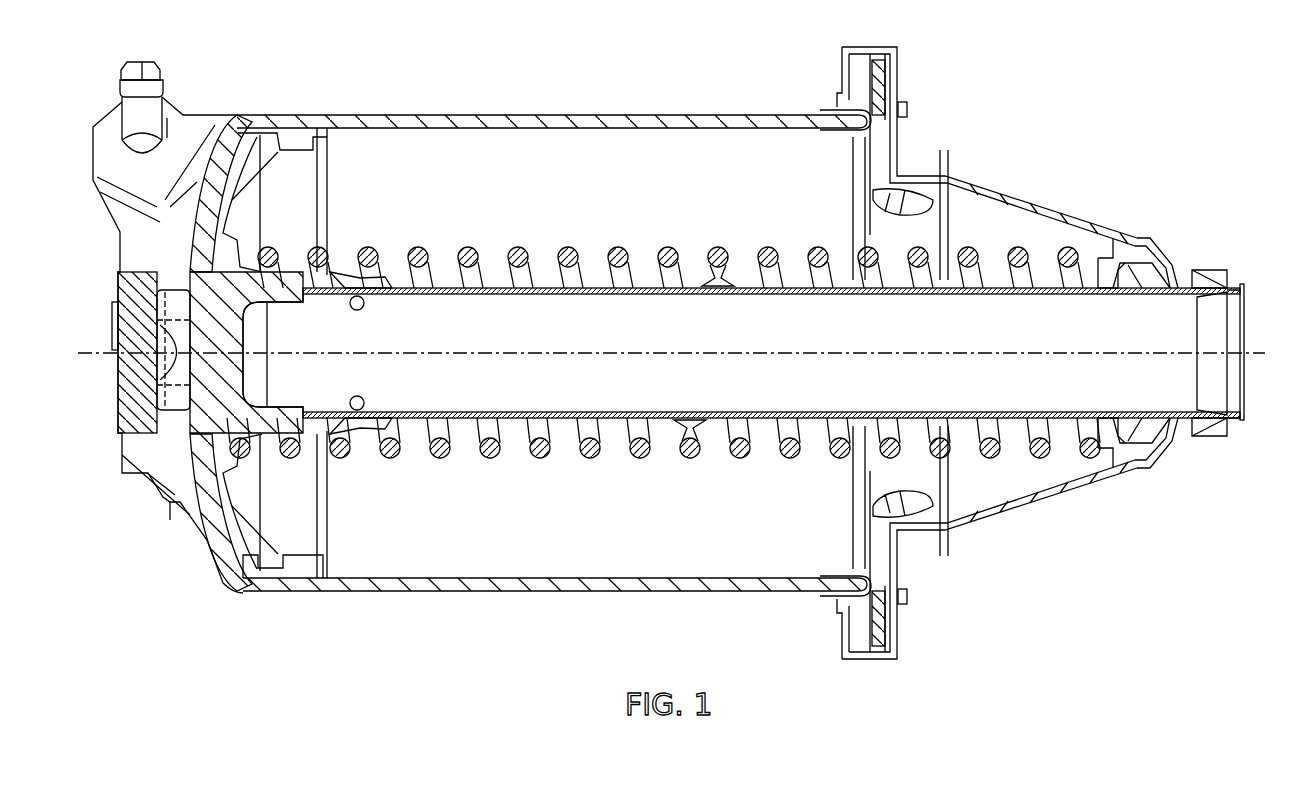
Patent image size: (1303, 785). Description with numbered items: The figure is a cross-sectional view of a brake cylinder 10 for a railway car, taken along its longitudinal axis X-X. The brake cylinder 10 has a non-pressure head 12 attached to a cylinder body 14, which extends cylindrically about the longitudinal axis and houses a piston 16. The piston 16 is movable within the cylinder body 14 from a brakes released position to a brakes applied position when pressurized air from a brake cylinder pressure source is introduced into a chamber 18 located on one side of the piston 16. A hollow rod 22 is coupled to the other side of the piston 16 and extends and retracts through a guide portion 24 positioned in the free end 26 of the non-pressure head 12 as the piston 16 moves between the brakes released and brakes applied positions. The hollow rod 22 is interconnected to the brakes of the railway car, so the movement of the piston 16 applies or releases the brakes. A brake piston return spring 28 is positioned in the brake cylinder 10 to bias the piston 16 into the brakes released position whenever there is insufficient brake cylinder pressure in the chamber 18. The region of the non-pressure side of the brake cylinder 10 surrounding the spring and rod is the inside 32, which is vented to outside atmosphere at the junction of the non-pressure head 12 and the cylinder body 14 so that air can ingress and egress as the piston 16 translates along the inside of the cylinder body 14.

The brake cylinder 10 is at (588, 79).
The non-pressure head 12 is at (999, 209).
The cylinder body 14 is at (346, 112).
The piston 16 is at (322, 589).
The chamber 18 is at (160, 332).
The hollow rod 22 is at (1243, 420).
The guide portion 24 is at (1160, 430).
The free end 26 is at (1134, 238).
The brake piston return spring 28 is at (990, 447).
The inside 32 is at (715, 568).